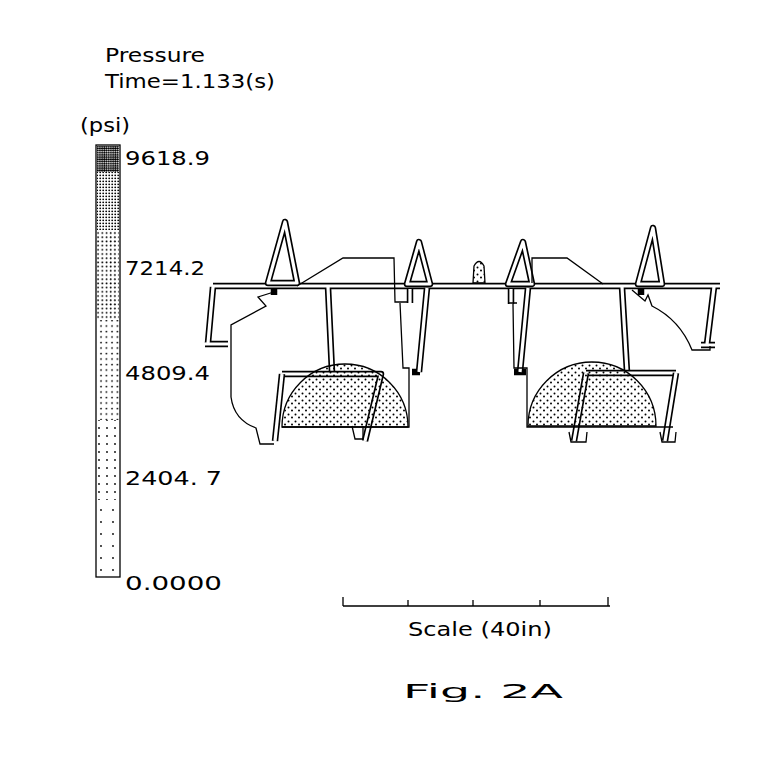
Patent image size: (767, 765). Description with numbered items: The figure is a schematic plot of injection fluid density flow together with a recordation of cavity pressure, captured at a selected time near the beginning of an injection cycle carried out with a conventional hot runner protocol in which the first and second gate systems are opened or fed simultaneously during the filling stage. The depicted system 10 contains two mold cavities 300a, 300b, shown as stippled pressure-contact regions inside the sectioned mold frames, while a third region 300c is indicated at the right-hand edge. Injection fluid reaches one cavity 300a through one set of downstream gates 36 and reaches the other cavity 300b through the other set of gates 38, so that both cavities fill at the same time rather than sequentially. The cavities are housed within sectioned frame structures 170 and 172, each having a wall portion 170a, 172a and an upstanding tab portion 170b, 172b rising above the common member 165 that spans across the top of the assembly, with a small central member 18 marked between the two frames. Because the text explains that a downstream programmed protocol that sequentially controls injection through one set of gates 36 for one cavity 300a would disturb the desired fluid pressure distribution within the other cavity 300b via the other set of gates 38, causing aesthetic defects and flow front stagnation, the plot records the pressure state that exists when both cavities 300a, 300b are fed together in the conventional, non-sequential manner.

The frame assembly 10 is at (667, 462).
The frame member 18 is at (481, 260).
The set of downstream gates 36 is at (598, 427).
The set of downstream gates 38 is at (344, 423).
The shield 165 is at (445, 285).
The trolley wheel frame 170 is at (677, 422).
The frame wall 170a is at (578, 407).
The frame tab 170b is at (643, 257).
The trolley wheel frame 172 is at (379, 413).
The frame wall 172a is at (272, 408).
The frame tab 172b is at (278, 253).
The mold cavity 300a is at (532, 393).
The mold cavity 300b is at (232, 393).
The pressure contact region 300c is at (676, 407).